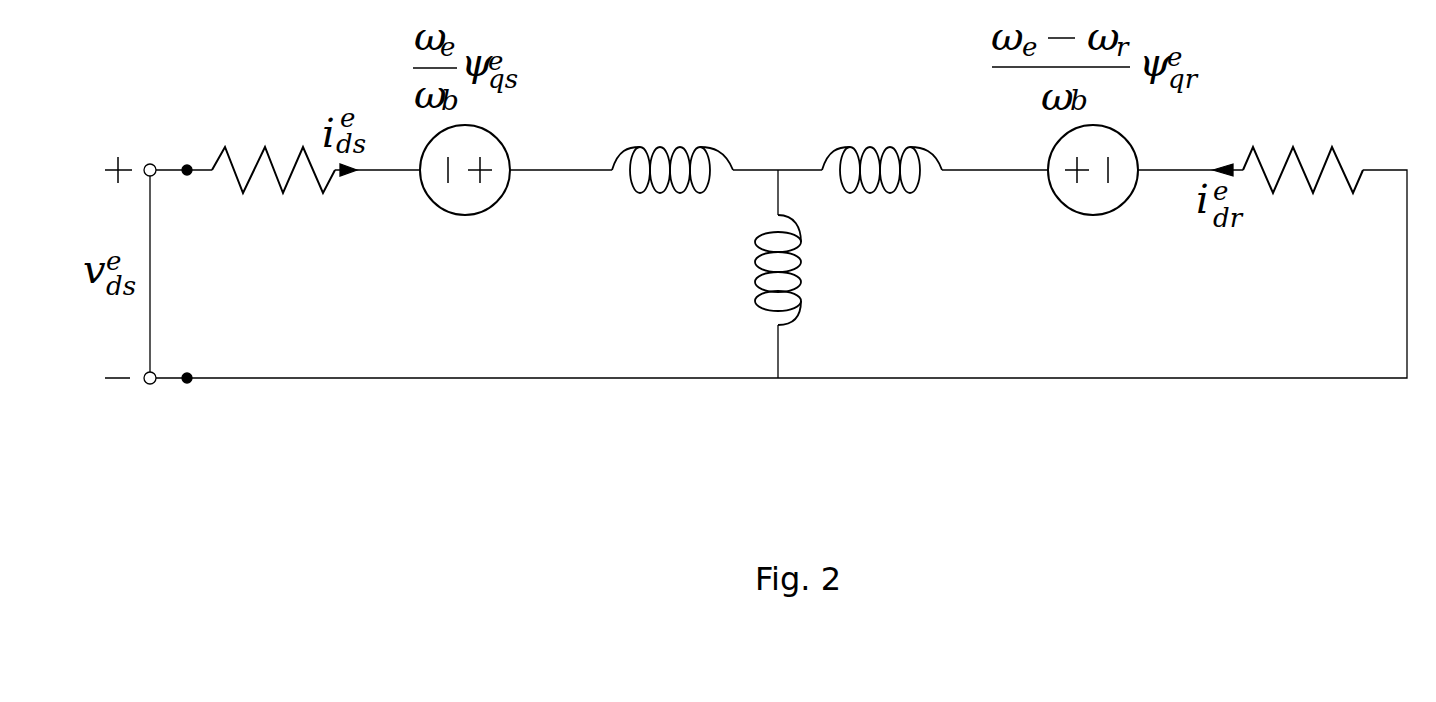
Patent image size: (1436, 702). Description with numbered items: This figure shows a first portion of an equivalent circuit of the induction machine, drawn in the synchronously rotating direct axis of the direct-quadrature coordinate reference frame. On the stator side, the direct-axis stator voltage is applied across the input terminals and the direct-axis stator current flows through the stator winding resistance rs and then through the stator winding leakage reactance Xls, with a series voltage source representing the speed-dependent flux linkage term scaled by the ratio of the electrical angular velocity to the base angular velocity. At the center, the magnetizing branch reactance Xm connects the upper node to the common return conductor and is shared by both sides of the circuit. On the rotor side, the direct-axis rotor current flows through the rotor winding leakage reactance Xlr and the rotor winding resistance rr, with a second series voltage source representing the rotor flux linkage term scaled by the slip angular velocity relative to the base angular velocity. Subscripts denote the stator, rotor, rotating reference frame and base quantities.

The stator winding resistance rs is at (273, 141).
The rotor winding resistance rr is at (1303, 139).
The stator winding leakage reactance Xls is at (672, 138).
The rotor winding leakage reactance Xlr is at (882, 138).
The magnetizing branch reactance Xm is at (817, 270).